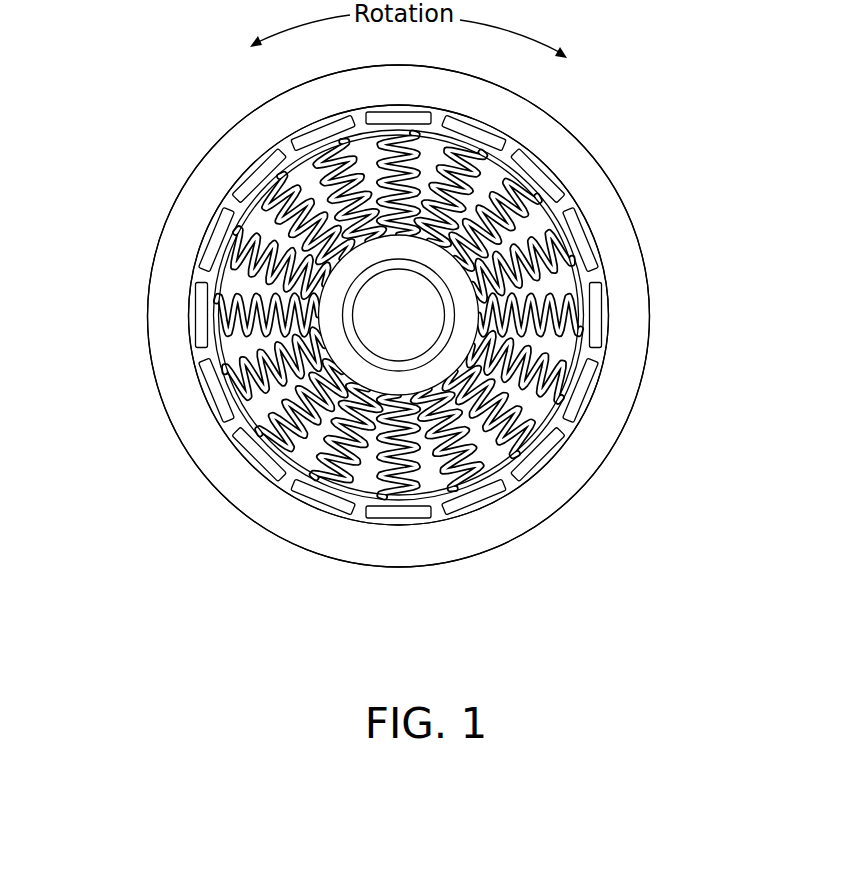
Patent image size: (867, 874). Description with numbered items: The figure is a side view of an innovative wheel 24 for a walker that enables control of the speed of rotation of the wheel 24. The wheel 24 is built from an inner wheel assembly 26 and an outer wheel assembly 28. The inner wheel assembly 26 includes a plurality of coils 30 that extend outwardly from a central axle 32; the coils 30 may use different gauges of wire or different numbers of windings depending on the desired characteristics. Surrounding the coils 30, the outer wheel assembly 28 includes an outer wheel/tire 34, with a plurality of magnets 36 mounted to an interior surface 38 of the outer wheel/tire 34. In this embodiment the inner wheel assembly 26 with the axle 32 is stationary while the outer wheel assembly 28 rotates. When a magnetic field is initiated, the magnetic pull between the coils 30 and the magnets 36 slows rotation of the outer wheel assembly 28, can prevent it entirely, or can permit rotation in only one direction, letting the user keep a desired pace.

The wheel 24 is at (272, 553).
The inner wheel assembly 26 is at (487, 167).
The outer wheel assembly 28 is at (145, 370).
The coils 30 is at (293, 160).
The axle 32 is at (410, 345).
The outer wheel/tire 34 is at (572, 175).
The magnets 36 is at (257, 460).
The interior surface 38 is at (445, 520).